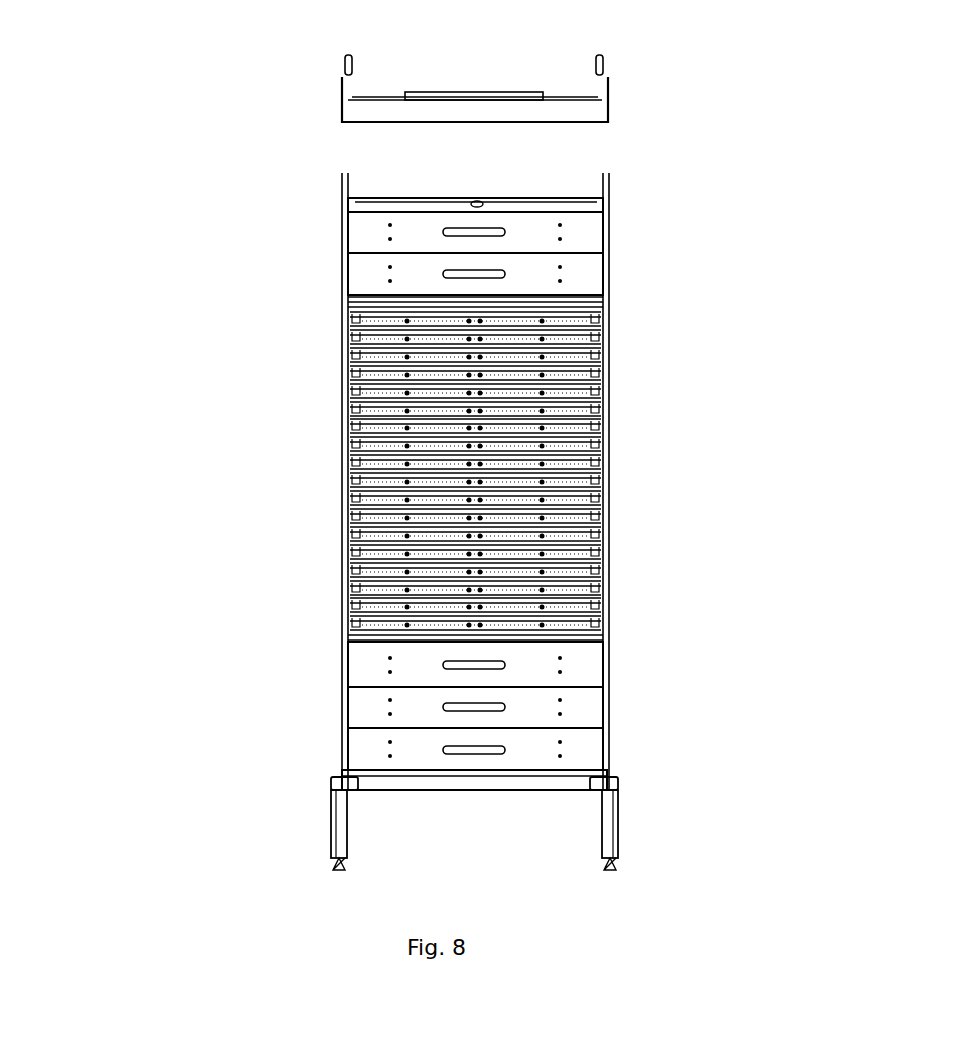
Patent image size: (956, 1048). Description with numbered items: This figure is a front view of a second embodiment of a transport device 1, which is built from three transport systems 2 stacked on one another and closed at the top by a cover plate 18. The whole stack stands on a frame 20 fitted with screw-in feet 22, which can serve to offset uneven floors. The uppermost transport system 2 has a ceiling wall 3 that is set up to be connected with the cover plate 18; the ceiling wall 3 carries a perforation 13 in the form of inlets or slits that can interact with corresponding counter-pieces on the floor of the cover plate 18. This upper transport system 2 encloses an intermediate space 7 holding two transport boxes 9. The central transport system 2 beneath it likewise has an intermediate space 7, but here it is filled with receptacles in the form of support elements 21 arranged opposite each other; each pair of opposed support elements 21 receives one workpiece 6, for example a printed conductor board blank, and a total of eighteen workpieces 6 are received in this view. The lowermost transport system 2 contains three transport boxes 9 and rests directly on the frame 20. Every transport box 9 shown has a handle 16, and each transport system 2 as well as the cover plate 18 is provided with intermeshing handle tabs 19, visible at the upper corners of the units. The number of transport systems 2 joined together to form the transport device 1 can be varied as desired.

The transport device 1 is at (434, 458).
The transport system 2 is at (483, 491).
The ceiling wall 3 is at (475, 172).
The workpiece 6 is at (553, 463).
The intermediate space 7 is at (525, 352).
The transport box 9 is at (588, 228).
The perforation 13 is at (475, 202).
The handle 16 is at (470, 92).
The cover plate 18 is at (561, 455).
The handle tab 19 is at (603, 69).
The frame 20 is at (488, 758).
The support element 21 is at (577, 468).
The screw-in foot 22 is at (610, 862).